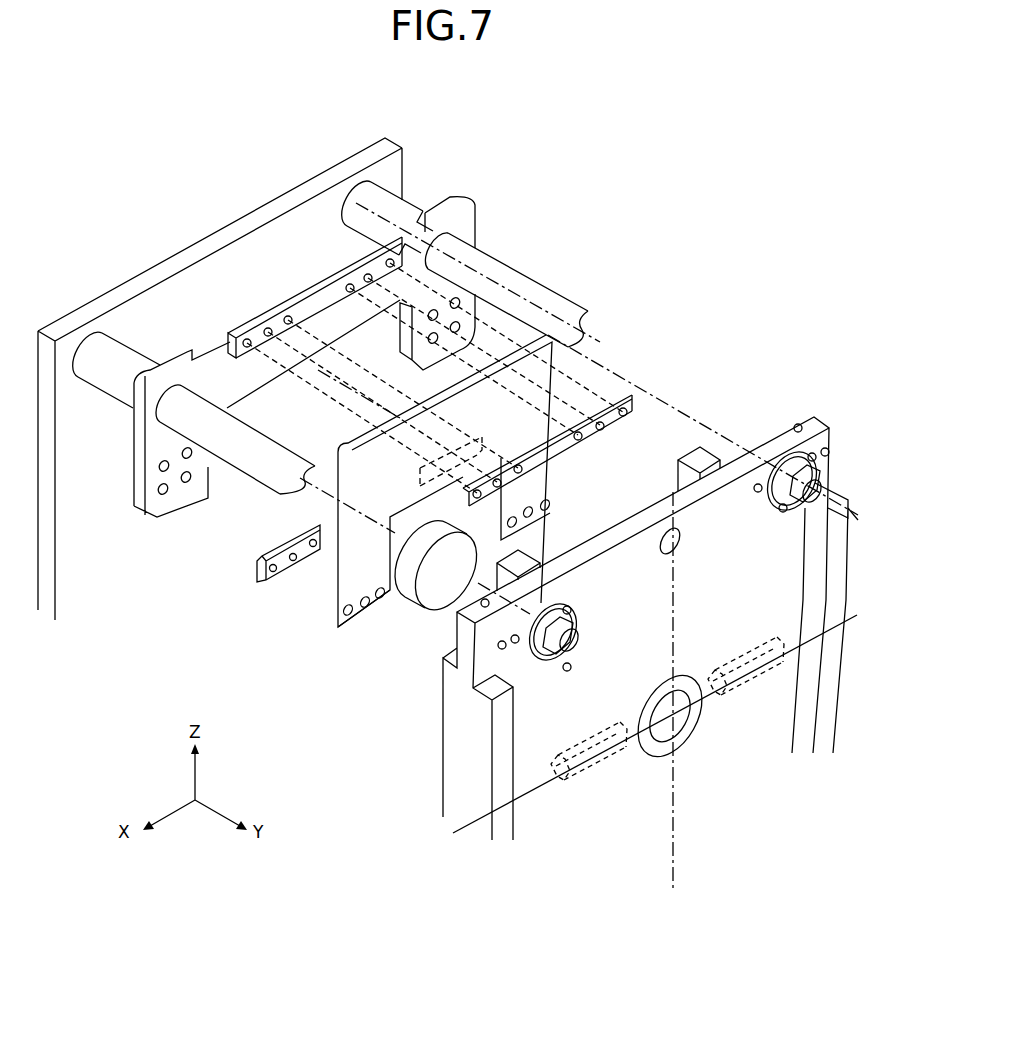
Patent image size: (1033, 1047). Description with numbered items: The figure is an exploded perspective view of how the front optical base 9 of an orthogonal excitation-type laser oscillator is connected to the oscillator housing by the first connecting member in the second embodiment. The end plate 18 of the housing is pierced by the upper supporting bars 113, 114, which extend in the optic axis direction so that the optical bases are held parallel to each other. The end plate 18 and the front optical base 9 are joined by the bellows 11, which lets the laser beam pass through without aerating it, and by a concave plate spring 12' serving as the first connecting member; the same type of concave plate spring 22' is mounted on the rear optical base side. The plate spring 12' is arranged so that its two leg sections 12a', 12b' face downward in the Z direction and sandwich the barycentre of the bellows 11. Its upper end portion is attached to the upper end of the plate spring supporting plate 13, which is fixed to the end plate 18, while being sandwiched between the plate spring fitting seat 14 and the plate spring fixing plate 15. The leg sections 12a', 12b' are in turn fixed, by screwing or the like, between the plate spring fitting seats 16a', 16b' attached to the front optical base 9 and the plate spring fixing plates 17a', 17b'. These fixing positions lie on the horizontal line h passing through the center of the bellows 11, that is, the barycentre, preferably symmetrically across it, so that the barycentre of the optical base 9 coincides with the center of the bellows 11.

The end plate 18 is at (395, 166).
The plate spring supporting plate 13 is at (470, 197).
The upper supporting bar 114 is at (507, 263).
The plate spring fitting seat 14 is at (297, 290).
The concave plate spring 12' is at (517, 467).
The concave plate spring 22' is at (517, 467).
The leg section 12b' is at (364, 642).
The bellows 11 is at (410, 598).
The plate spring fixing plate 17a' is at (564, 424).
The plate spring fixing plate 15 is at (560, 432).
The leg section 12a' is at (630, 469).
The horizontal line h is at (468, 427).
The front optical base 9 is at (823, 413).
The plate spring fitting seat 16b' is at (583, 740).
The plate spring fitting seat 16a' is at (740, 655).
The upper supporting bar 113 is at (237, 477).
The plate spring fixing plate 17b' is at (266, 582).